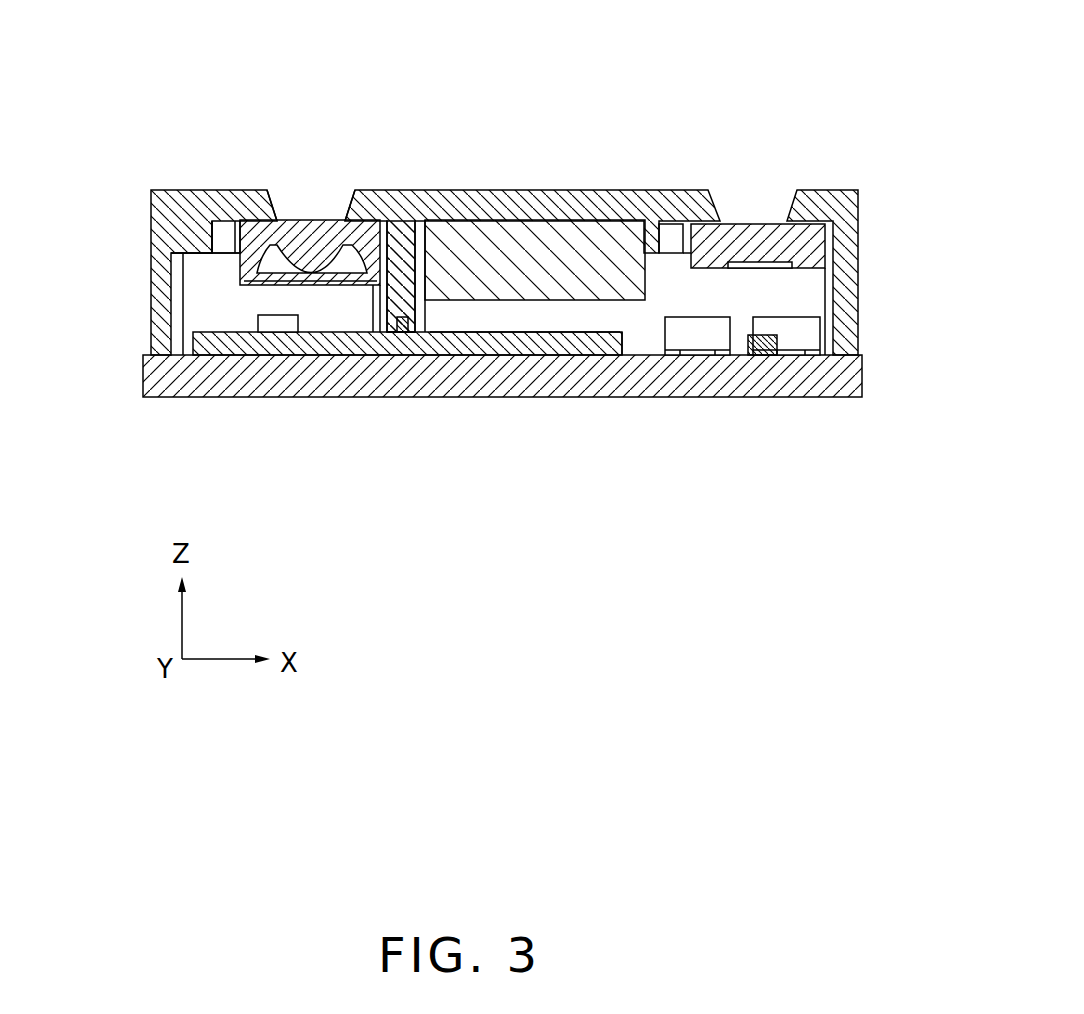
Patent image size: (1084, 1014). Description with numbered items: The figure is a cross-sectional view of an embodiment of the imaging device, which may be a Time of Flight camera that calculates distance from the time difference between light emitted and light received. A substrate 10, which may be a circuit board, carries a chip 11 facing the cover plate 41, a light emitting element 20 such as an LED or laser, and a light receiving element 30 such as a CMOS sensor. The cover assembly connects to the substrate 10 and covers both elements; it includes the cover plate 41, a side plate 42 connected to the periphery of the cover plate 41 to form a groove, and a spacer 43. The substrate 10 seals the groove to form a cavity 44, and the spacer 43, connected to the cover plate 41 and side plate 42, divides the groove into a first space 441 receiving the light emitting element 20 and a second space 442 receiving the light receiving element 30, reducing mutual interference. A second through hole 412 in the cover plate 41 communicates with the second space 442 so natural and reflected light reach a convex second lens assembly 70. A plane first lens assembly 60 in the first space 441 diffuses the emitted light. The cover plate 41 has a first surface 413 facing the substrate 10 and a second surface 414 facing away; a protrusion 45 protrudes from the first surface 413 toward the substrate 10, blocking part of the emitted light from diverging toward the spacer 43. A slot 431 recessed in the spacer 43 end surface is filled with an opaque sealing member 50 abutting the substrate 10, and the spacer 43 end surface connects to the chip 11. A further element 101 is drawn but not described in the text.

The substrate 10 is at (205, 382).
The chip 11 is at (203, 348).
The light emitting element 20 is at (765, 345).
The light receiving element 30 is at (286, 323).
The cover plate 41 is at (536, 196).
The second through hole 412 is at (310, 198).
The first surface 413 is at (194, 247).
The second surface 414 is at (225, 193).
The side plate 42 is at (843, 273).
The spacer 43 is at (413, 282).
The slot 431 is at (389, 330).
The cavity 44 is at (620, 455).
The first space 441 is at (640, 318).
The second space 442 is at (362, 303).
The protrusion 45 is at (617, 238).
The sealing member 50 is at (402, 320).
The first lens assembly 60 is at (763, 238).
The second lens assembly 70 is at (250, 262).
The sensor chip 101 is at (702, 338).